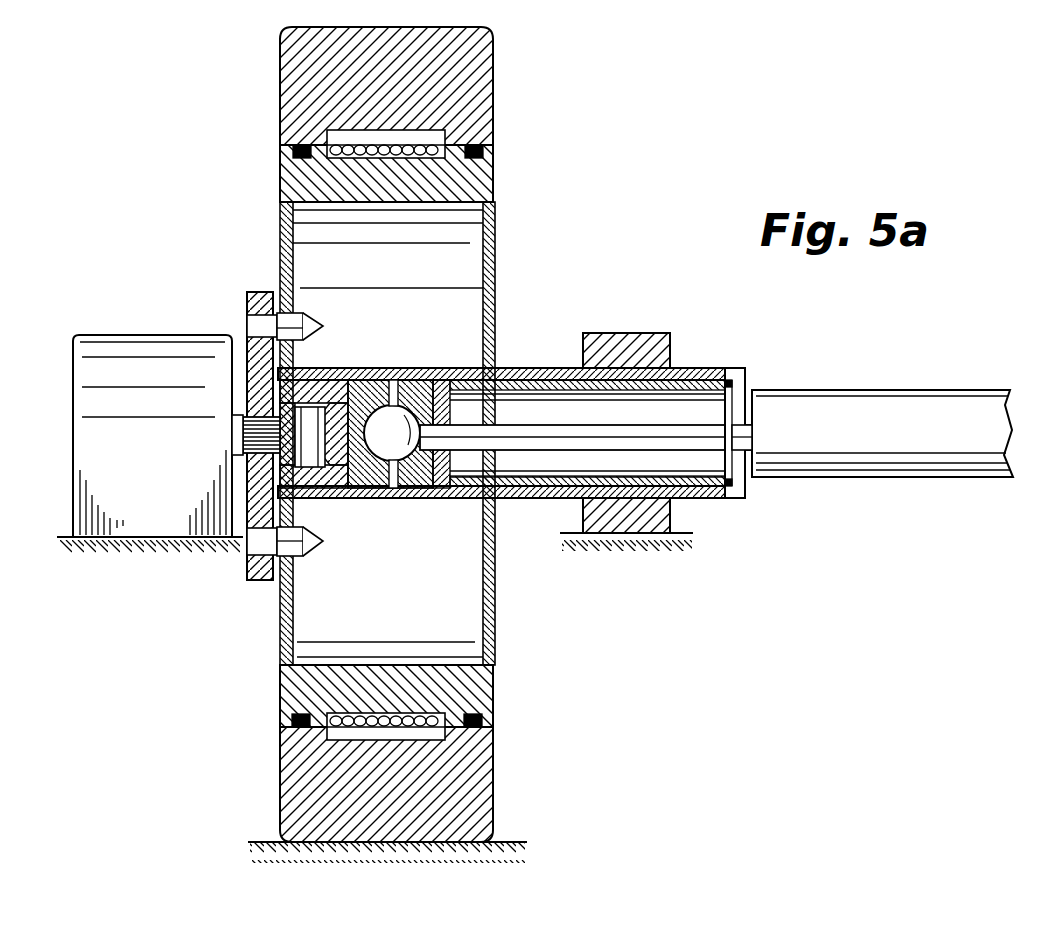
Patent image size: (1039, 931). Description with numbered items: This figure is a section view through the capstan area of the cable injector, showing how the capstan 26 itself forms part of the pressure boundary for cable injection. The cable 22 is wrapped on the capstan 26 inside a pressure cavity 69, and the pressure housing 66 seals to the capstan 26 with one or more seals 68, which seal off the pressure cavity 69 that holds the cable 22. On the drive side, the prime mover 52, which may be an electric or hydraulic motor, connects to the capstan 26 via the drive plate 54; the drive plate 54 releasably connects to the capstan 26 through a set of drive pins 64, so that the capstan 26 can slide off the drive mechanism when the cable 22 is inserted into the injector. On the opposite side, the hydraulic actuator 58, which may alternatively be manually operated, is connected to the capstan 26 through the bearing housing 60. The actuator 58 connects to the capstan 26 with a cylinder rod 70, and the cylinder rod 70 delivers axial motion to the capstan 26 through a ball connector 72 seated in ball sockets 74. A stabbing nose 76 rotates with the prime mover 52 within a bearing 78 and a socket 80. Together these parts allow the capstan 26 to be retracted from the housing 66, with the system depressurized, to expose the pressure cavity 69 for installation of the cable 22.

The cable 22 is at (410, 133).
The capstan 26 is at (480, 183).
The prime mover 52 is at (127, 352).
The drive plate 54 is at (258, 292).
The hydraulic actuator 58 is at (890, 453).
The bearing housing 60 is at (670, 333).
The drive pins 64 is at (253, 328).
The pressure housing 66 is at (490, 82).
The seals 68 is at (493, 148).
The pressure cavity 69 is at (337, 132).
The cylinder rod 70 is at (697, 443).
The ball connector 72 is at (430, 498).
The ball sockets 74 is at (397, 500).
The stabbing nose 76 is at (375, 375).
The bearing 78 is at (363, 377).
The socket 80 is at (337, 377).